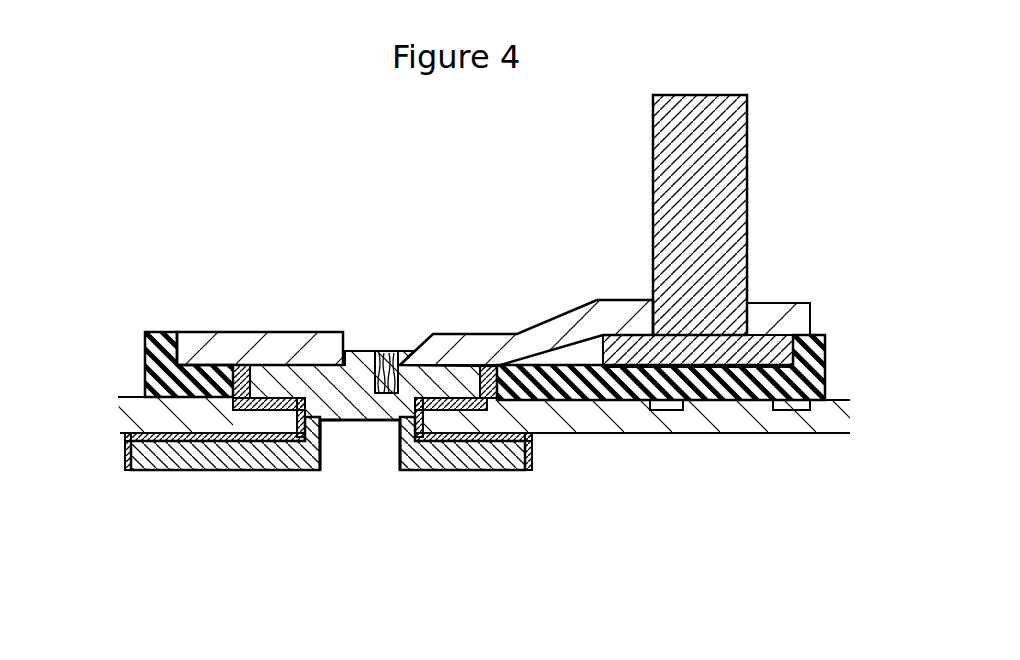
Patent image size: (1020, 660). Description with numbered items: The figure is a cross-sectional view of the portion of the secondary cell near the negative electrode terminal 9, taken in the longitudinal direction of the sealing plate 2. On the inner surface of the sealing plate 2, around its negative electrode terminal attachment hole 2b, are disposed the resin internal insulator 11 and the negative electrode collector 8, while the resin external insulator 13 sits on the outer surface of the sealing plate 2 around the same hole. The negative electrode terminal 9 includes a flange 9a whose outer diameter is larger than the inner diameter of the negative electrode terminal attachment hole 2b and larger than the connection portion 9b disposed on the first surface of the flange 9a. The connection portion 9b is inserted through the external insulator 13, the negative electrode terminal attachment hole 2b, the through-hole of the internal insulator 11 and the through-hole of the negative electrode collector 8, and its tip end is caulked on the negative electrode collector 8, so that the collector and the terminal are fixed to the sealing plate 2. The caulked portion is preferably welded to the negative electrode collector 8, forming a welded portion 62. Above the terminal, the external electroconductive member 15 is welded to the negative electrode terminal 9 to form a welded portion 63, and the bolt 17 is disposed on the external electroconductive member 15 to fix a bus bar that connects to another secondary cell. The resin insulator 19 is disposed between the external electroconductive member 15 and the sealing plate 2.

The sealing plate 2 is at (135, 410).
The negative electrode terminal attachment hole 2b is at (402, 433).
The negative electrode collector 8 is at (182, 470).
The negative electrode terminal 9 is at (367, 425).
The flange 9a is at (440, 350).
The connection portion 9b is at (322, 421).
The internal insulator 11 is at (120, 443).
The external insulator 13 is at (272, 395).
The external electroconductive member 15 is at (232, 345).
The bolt 17 is at (713, 158).
The insulator 19 is at (160, 332).
The welded portion 62 is at (285, 462).
The welded portion 63 is at (382, 353).